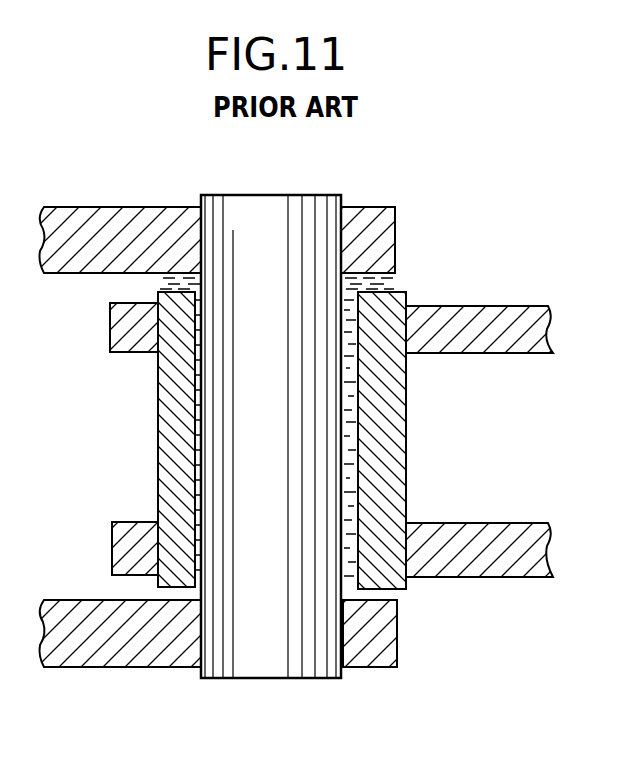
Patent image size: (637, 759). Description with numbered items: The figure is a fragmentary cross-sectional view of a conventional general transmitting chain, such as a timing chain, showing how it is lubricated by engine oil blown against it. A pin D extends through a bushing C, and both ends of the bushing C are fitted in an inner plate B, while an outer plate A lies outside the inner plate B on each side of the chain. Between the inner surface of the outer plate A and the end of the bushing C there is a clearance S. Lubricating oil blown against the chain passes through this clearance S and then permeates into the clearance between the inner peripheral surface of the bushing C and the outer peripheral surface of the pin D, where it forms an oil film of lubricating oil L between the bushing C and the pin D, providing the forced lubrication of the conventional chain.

The outer plate A is at (104, 225).
The inner plate B is at (528, 312).
The bushing C is at (397, 476).
The pin D is at (268, 212).
The clearance S is at (392, 283).
The lubricating oil L is at (158, 447).